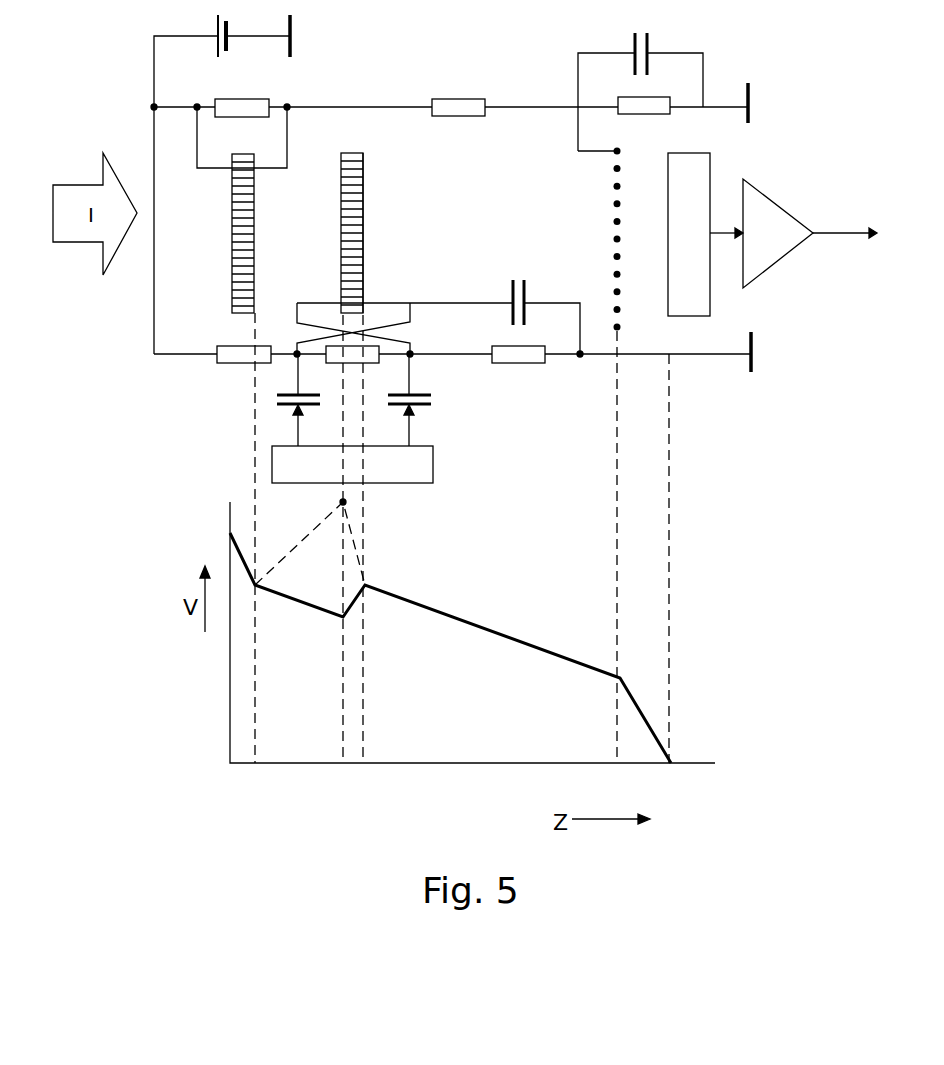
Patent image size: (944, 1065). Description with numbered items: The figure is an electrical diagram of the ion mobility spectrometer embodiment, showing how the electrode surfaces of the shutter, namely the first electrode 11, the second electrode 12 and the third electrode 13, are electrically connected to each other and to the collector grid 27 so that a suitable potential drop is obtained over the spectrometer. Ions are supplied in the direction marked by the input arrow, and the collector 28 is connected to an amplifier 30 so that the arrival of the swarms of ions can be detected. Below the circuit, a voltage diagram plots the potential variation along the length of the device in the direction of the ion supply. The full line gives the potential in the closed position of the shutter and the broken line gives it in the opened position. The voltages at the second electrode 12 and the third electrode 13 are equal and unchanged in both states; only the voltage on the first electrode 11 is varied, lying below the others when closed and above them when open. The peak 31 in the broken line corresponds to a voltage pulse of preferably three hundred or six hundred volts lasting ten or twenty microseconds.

The first electrode 11 is at (340, 170).
The second electrode 12 is at (363, 175).
The third electrode 13 is at (240, 262).
The collector grid 27 is at (614, 203).
The collector 28 is at (697, 297).
The amplifier 30 is at (770, 217).
The peak 31 is at (348, 502).